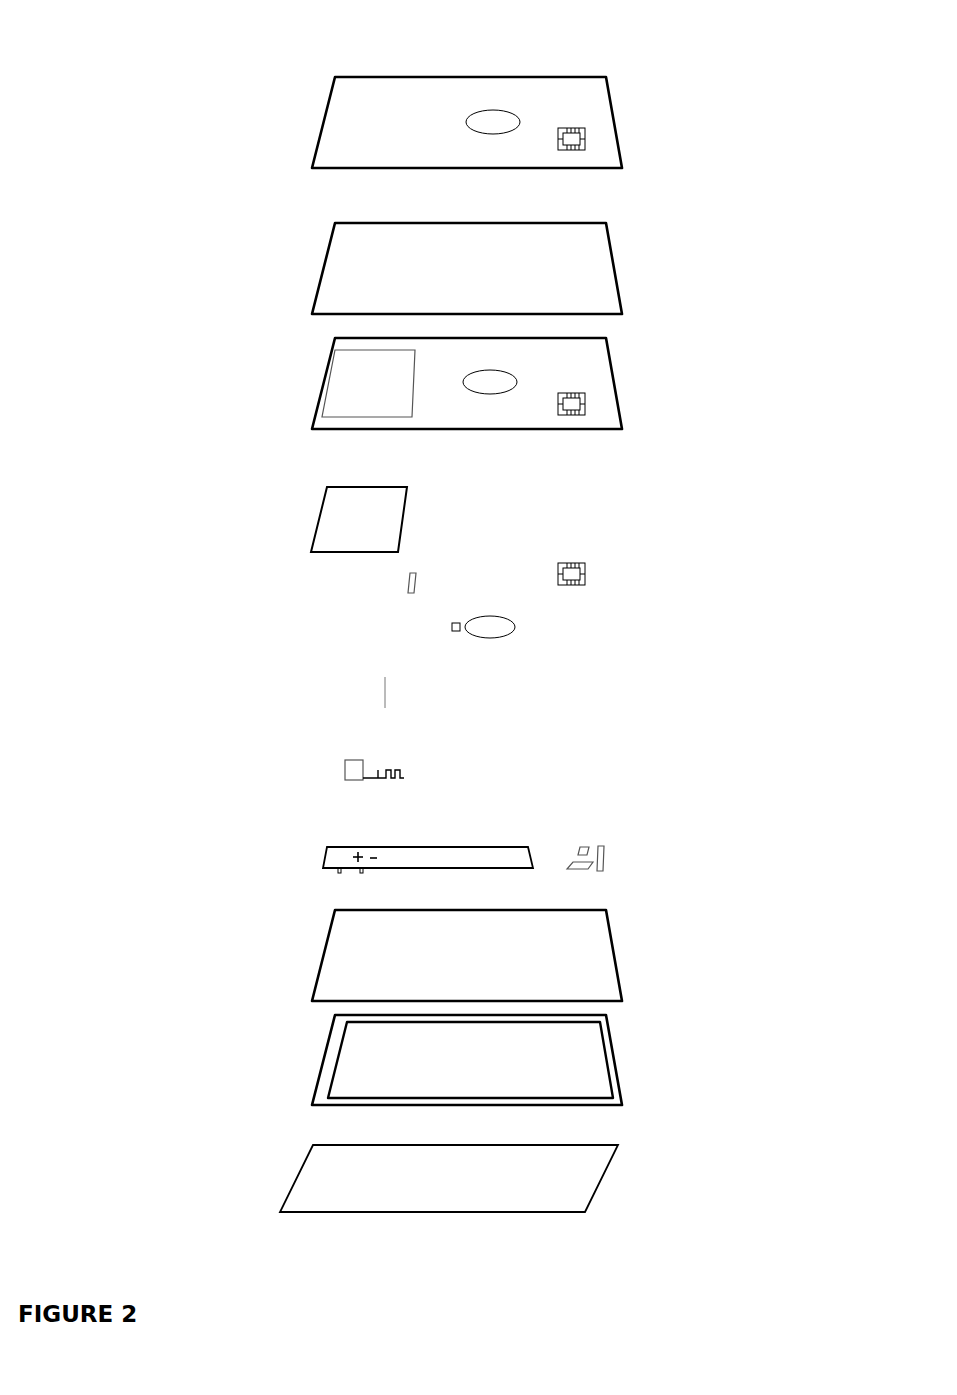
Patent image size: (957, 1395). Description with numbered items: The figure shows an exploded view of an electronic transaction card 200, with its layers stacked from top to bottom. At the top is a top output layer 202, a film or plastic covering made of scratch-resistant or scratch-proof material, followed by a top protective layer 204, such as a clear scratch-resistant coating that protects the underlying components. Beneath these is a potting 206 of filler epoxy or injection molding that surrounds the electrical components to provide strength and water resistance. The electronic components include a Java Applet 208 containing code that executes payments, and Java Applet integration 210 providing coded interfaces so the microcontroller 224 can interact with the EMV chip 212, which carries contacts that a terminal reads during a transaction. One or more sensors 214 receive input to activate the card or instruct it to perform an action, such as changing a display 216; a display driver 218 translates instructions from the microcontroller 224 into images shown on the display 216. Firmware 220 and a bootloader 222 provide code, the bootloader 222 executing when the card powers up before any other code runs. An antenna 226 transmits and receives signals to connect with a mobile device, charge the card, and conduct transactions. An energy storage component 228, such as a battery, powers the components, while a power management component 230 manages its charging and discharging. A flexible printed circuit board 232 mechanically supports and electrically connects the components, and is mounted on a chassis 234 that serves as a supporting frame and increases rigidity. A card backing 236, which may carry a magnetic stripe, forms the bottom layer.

The electronic transaction card 200 is at (434, 613).
The top output layer 202 is at (620, 113).
The top protective layer 204 is at (685, 267).
The potting 206 is at (648, 376).
The Java Applet 208 is at (627, 472).
The Java Applet integration 210 is at (628, 523).
The EMV chip 212 is at (592, 572).
The sensors 214 is at (523, 625).
The display 216 is at (318, 505).
The display driver 218 is at (405, 582).
The firmware 220 is at (287, 645).
The bootloader 222 is at (325, 710).
The microcontroller 224 is at (340, 767).
The antenna 226 is at (387, 783).
The energy storage component 228 is at (537, 858).
The power management component 230 is at (608, 852).
The flexible printed circuit board 232 is at (308, 980).
The chassis 234 is at (627, 1053).
The card backing 236 is at (618, 1148).